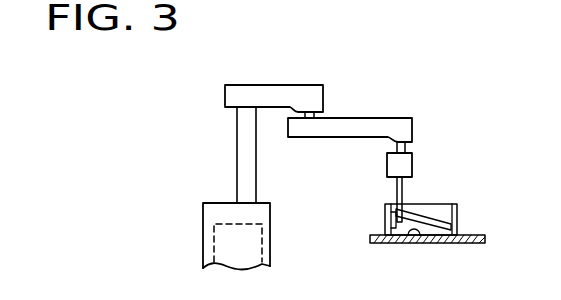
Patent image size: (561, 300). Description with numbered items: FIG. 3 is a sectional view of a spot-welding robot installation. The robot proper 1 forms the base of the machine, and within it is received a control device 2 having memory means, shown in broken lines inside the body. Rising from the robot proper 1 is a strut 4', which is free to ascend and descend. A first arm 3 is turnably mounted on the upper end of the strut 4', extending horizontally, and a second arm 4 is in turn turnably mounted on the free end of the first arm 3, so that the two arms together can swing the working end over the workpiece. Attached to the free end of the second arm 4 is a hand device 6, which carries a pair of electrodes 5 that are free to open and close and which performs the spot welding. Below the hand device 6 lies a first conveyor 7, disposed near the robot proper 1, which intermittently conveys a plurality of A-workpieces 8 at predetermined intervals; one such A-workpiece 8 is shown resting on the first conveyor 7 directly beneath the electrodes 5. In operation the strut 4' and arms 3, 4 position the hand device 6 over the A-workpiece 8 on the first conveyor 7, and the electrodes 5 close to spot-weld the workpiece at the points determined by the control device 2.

The robot proper 1 is at (203, 203).
The control device 2 is at (214, 245).
The first arm 3 is at (272, 85).
The second arm 4 is at (350, 109).
The strut 4' is at (220, 155).
The electrodes 5 is at (397, 194).
The hand device 6 is at (402, 163).
The first conveyor 7 is at (466, 245).
The A-workpiece 8 is at (415, 238).